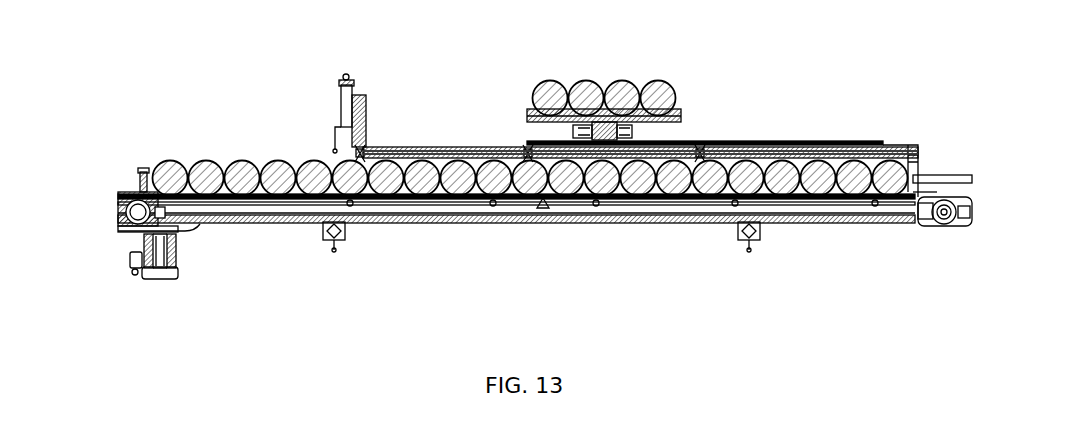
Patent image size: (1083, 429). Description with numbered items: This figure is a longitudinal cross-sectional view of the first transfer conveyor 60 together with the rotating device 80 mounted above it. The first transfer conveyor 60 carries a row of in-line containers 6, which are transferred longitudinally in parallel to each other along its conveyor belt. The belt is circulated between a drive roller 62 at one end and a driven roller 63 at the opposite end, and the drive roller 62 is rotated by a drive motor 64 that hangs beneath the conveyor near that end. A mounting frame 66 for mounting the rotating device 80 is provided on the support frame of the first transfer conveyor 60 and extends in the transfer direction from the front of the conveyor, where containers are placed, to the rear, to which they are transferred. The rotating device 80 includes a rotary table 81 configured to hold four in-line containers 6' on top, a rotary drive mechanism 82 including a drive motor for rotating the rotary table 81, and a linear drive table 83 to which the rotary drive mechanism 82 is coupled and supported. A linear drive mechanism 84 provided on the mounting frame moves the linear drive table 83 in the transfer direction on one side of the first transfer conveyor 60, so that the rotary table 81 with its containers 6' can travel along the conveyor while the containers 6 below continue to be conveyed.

The in-line container 6 is at (530, 221).
The in-line container 6' is at (604, 67).
The first transfer conveyor 60 is at (472, 243).
The drive roller 62 is at (126, 232).
The driven roller 63 is at (952, 233).
The drive motor 64 is at (192, 258).
The mounting frame 66 is at (598, 223).
The rotating device 80 is at (722, 90).
The rotary table 81 is at (515, 113).
The rotary drive mechanism 82 is at (642, 131).
The linear drive table 83 is at (515, 136).
The linear drive mechanism 84 is at (412, 142).